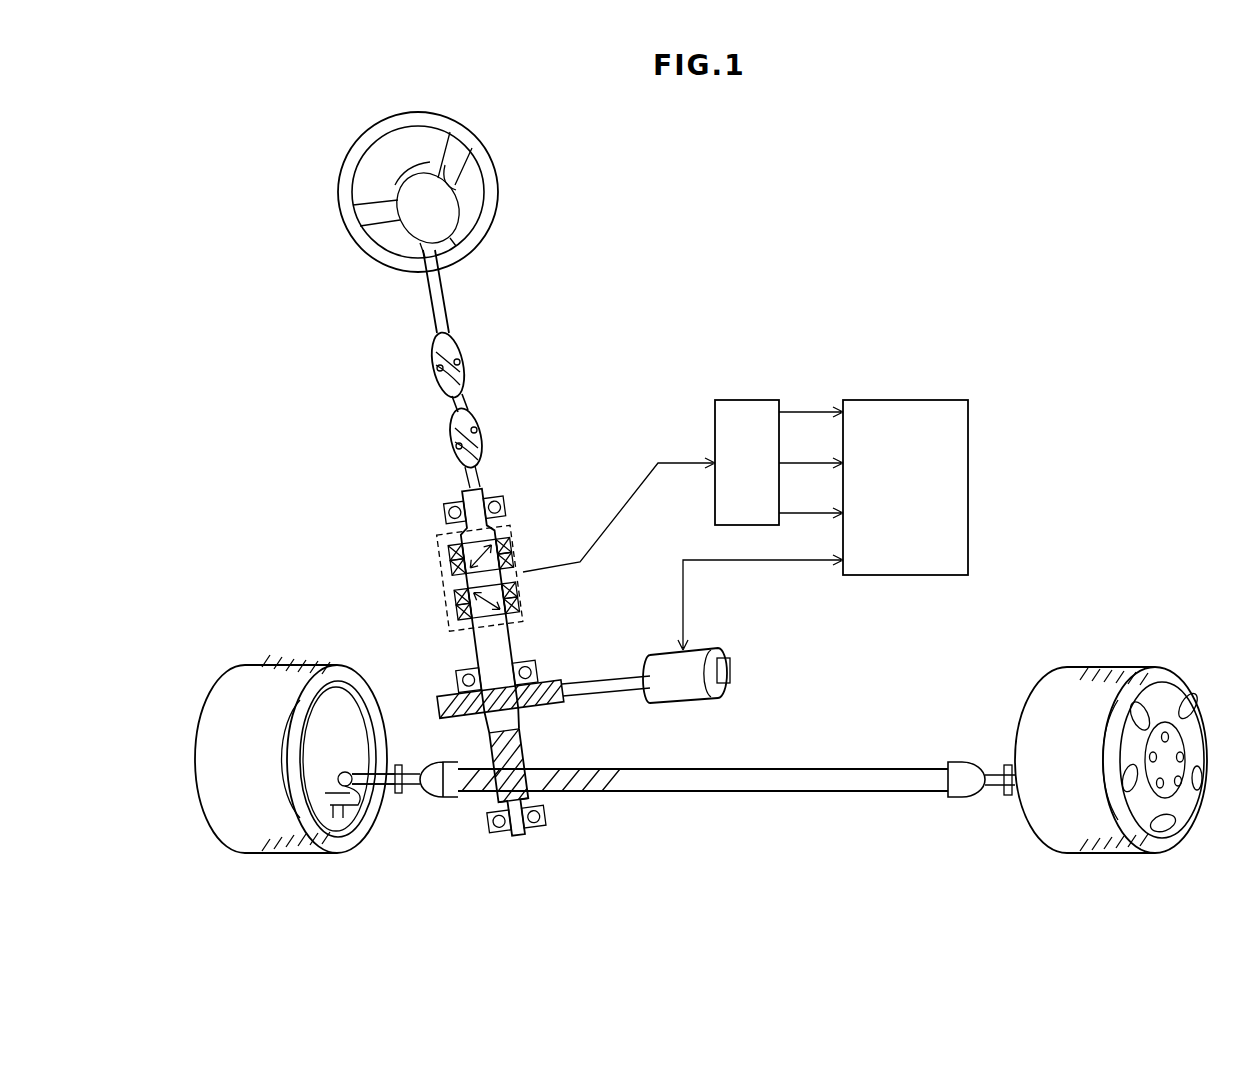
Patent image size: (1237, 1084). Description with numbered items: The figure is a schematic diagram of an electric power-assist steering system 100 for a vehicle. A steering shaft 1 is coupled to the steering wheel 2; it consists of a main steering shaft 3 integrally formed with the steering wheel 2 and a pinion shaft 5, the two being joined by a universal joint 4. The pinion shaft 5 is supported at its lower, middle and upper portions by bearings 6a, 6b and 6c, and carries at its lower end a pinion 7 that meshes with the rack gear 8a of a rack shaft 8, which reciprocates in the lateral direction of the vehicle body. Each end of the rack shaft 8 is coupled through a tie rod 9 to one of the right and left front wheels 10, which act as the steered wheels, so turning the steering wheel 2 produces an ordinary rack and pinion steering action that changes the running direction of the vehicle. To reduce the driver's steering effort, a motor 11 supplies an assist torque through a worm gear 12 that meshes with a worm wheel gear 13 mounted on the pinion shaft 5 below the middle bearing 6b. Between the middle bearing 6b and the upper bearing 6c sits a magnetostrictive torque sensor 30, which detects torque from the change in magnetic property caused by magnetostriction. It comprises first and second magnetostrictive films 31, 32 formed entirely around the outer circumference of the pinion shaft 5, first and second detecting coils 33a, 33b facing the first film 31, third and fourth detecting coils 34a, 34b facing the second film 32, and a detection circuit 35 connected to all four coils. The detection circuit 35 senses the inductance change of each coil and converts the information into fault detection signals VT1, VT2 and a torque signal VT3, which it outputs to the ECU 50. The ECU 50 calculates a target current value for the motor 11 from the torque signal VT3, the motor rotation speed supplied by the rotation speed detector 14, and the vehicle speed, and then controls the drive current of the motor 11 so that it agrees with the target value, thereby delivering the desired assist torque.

The electric power-assist steering system 100 is at (630, 266).
The steering shaft 1 is at (432, 345).
The steering wheel 2 is at (493, 158).
The main steering shaft 3 is at (430, 305).
The universal joint 4 is at (445, 392).
The pinion shaft 5 is at (488, 720).
The bearing 6a is at (488, 832).
The bearing 6b is at (537, 667).
The bearing 6c is at (498, 497).
The pinion 7 is at (518, 753).
The rack shaft 8 is at (740, 792).
The rack gear 8a is at (577, 797).
The tie rod 9 is at (410, 785).
The front wheel 10 is at (228, 665).
The motor 11 is at (725, 688).
The worm gear 12 is at (535, 708).
The worm wheel gear 13 is at (437, 702).
The rotation speed detector 14 is at (732, 662).
The magnetostrictive torque sensor 30 is at (442, 583).
The first magnetostrictive film 31 is at (482, 547).
The second magnetostrictive film 32 is at (493, 618).
The first detecting coil 33a is at (453, 545).
The second detecting coil 33b is at (455, 572).
The third detecting coil 34a is at (457, 598).
The fourth detecting coil 34b is at (458, 617).
The detection circuit 35 is at (755, 400).
The ECU 50 is at (915, 400).
The fault detection signal VT1 is at (811, 399).
The fault detection signal VT2 is at (811, 450).
The torque signal VT3 is at (811, 500).